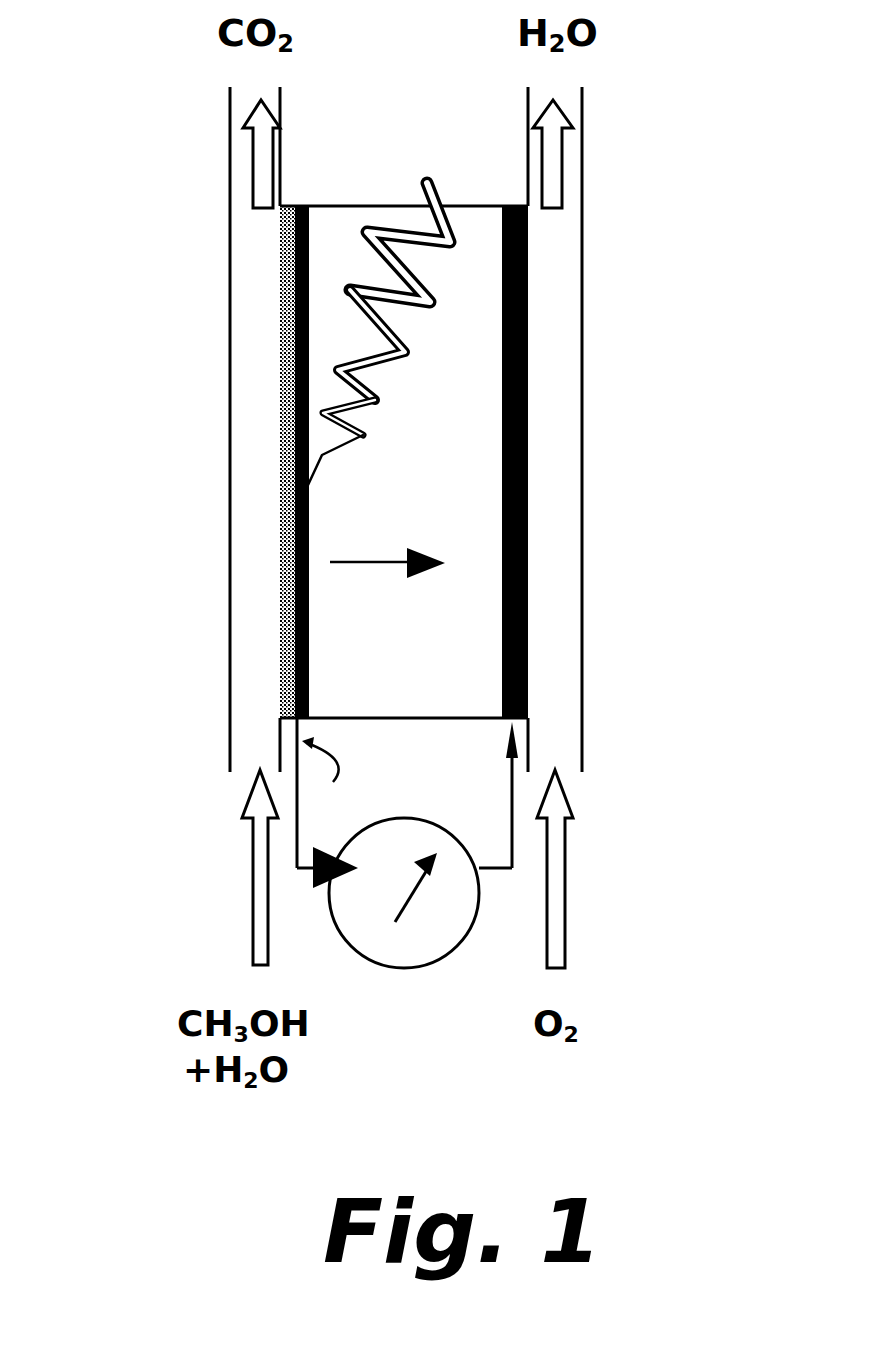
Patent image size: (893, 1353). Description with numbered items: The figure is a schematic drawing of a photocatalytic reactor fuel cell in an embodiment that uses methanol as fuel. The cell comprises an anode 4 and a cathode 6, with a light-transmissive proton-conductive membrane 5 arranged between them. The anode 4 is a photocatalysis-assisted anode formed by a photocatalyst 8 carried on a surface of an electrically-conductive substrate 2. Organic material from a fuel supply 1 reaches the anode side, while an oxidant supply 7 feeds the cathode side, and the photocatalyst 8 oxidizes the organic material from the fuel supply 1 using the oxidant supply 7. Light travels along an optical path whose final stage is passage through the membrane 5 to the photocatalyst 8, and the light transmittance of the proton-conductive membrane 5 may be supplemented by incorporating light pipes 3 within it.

The fuel supply 1 is at (268, 288).
The electrically-conductive substrate 2 is at (279, 413).
The light pipes 3 is at (460, 221).
The anode 4 is at (407, 843).
The light-transmissive proton-conductive membrane 5 is at (410, 645).
The cathode 6 is at (530, 447).
The oxidant supply 7 is at (567, 305).
The photocatalyst 8 is at (283, 586).